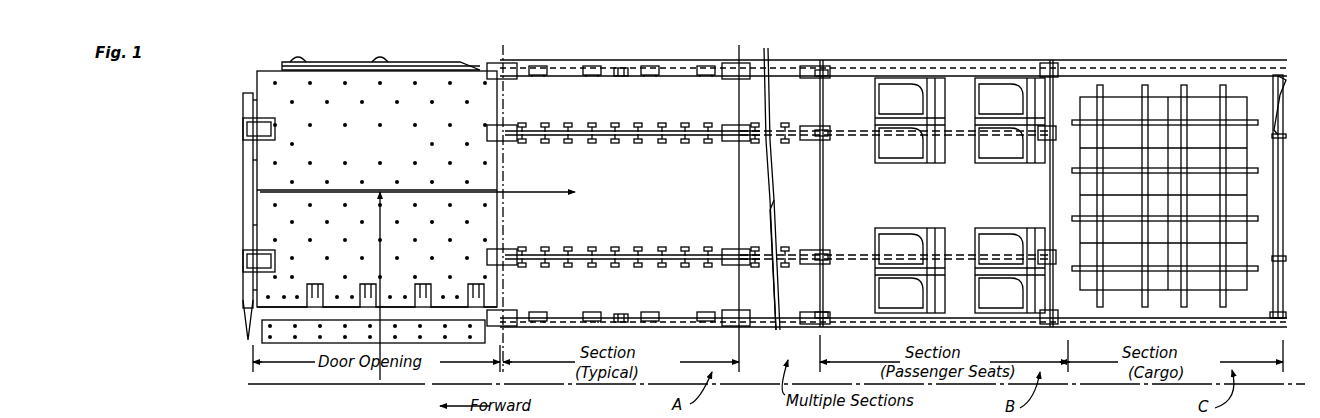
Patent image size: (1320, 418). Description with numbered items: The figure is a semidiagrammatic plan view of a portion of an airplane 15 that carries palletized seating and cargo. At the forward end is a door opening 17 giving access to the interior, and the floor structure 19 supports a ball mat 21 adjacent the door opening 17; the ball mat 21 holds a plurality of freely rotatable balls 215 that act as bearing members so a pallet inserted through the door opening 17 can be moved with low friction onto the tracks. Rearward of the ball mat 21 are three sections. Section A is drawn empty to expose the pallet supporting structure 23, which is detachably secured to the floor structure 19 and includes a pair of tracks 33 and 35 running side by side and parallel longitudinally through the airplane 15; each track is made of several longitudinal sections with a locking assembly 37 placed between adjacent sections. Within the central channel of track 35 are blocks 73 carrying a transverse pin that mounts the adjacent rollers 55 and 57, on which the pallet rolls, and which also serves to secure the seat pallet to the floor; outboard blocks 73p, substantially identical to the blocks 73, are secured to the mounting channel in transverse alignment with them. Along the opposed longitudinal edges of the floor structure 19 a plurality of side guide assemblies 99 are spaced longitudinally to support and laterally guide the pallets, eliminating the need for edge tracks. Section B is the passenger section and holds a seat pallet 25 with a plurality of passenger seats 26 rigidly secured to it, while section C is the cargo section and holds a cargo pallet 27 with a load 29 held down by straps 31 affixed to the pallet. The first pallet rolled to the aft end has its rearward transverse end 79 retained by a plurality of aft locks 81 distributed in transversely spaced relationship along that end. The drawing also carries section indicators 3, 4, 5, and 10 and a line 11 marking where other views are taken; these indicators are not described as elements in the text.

The vehicle end wall / section line 11 is at (243, 286).
The airplane 15 is at (1282, 128).
The door opening 17 is at (340, 372).
The floor structure 19 is at (672, 100).
The ball mat 21 is at (257, 90).
The balls 215 is at (408, 142).
The pallet supporting structure 23 is at (609, 190).
The seat pallet 25 is at (955, 90).
The passenger seats 26 is at (990, 235).
The cargo pallet 27 is at (1205, 100).
The load 29 is at (1123, 105).
The straps 31 is at (1100, 86).
The track 33 is at (598, 118).
The track 35 is at (578, 246).
The locking assembly 37 is at (508, 120).
The roller 55 is at (690, 264).
The roller 57 is at (690, 248).
The block 73 is at (625, 235).
The outboard block 73p is at (622, 66).
The rearward transverse end 79 is at (1280, 180).
The aft locks 81 is at (1283, 86).
The side guide assemblies 99 is at (592, 66).
The section 3- 3 is at (712, 234).
The section 4- 4 is at (1265, 245).
The section 5- 5 is at (586, 291).
The section 10- 10 is at (812, 268).